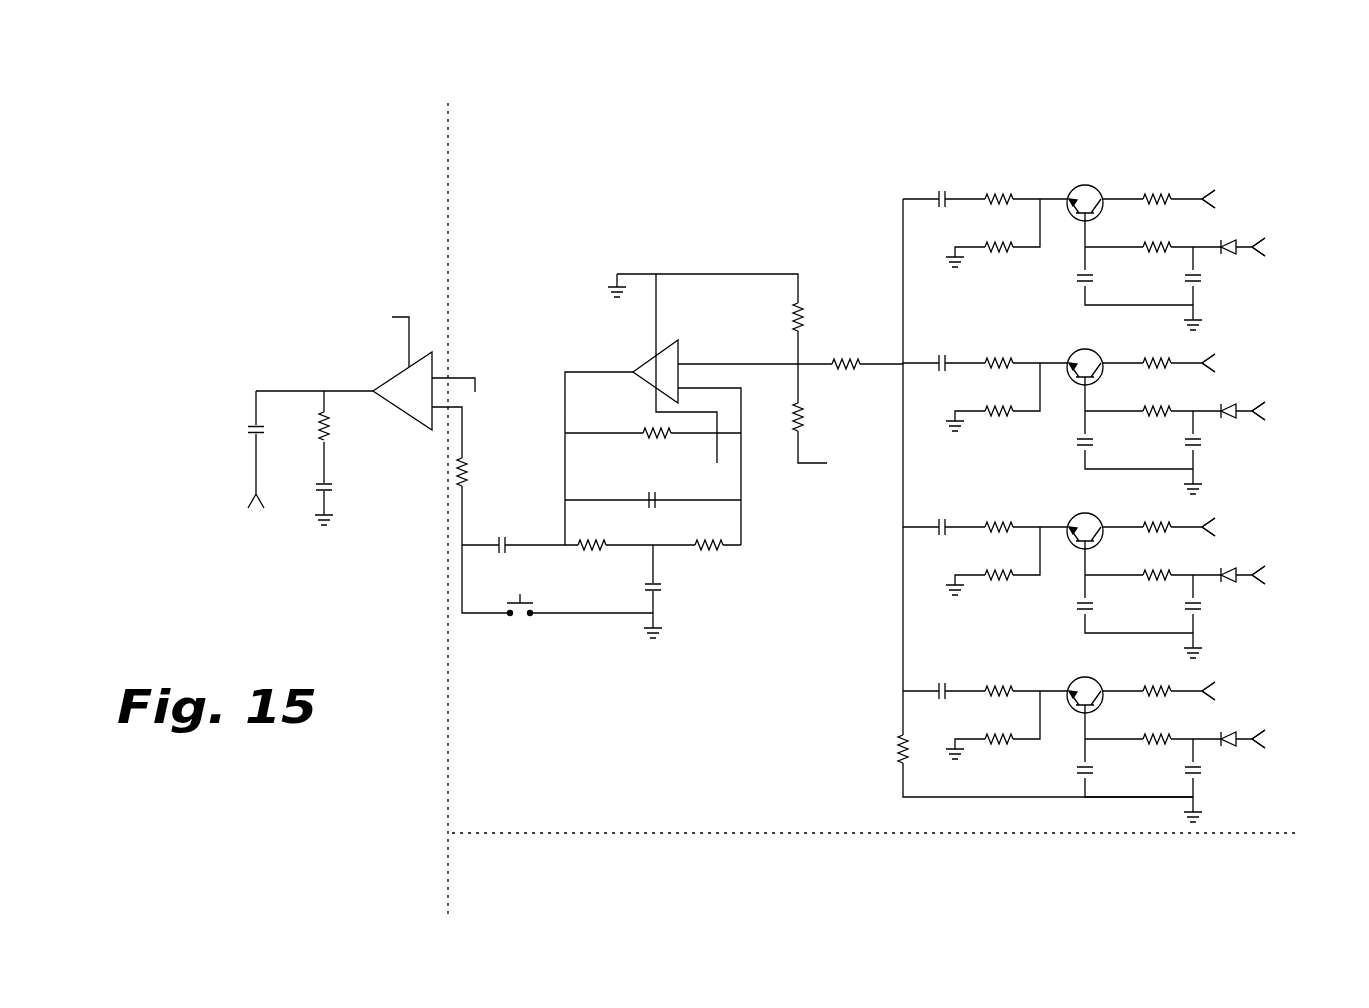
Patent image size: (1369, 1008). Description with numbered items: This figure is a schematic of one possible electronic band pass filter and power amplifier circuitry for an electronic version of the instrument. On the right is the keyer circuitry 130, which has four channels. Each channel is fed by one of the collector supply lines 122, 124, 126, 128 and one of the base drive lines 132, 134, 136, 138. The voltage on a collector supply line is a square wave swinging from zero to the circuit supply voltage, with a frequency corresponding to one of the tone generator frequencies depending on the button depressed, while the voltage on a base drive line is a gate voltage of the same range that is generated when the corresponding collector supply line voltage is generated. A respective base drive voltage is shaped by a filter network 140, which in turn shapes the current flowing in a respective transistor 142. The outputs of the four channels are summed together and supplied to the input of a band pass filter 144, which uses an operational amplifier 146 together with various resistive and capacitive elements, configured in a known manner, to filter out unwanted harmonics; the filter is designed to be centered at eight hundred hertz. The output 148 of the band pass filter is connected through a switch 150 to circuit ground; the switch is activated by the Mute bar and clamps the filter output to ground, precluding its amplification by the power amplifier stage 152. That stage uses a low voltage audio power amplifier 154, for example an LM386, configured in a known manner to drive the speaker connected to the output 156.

The collector supply line 122 is at (1216, 193).
The collector supply line 124 is at (1216, 362).
The collector supply line 126 is at (1216, 525).
The collector supply line 128 is at (1216, 689).
The keyer circuitry 130 is at (1031, 105).
The base drive line 132 is at (1268, 245).
The base drive line 134 is at (1268, 408).
The base drive line 136 is at (1268, 573).
The base drive line 138 is at (1268, 737).
The filter network 140 is at (1070, 307).
The transistor 142 is at (1084, 184).
The band pass filter 144 is at (713, 217).
The operational amplifier 146 is at (680, 346).
The output 148 is at (466, 539).
The switch 150 is at (524, 623).
The power amplifier stage 152 is at (318, 289).
The low voltage audio power amplifier 154 is at (403, 413).
The output 156 is at (251, 473).